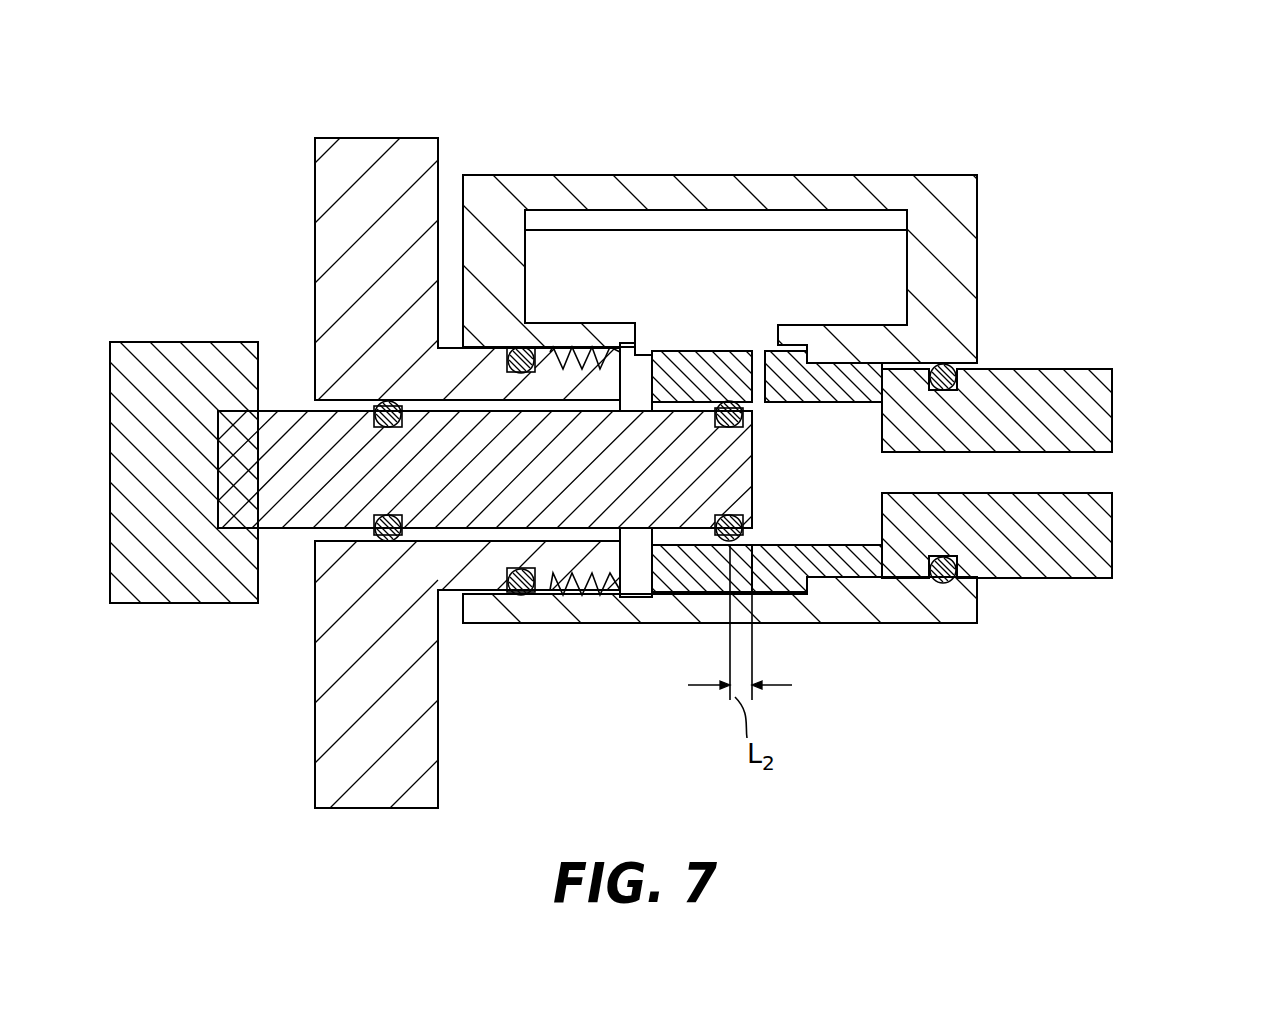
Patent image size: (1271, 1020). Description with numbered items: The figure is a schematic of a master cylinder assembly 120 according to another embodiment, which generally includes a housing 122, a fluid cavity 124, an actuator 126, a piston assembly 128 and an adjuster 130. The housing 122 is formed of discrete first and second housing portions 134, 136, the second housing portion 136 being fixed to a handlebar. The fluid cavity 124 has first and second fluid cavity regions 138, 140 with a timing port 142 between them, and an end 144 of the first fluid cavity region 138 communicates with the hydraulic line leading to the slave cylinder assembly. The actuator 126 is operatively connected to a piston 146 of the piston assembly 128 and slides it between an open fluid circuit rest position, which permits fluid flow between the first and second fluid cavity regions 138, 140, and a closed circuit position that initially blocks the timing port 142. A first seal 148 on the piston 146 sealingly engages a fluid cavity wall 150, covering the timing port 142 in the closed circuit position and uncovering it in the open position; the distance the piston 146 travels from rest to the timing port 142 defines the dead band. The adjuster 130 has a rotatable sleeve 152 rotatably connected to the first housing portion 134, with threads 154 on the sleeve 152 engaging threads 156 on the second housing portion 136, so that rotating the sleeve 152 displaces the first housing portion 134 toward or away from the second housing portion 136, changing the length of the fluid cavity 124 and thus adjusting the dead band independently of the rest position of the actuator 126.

The master cylinder assembly 120 is at (823, 85).
The housing 122 is at (280, 252).
The fluid cavity 124 is at (850, 558).
The actuator 126 is at (145, 580).
The piston assembly 128 is at (293, 552).
The adjuster 130 is at (555, 165).
The first housing portion 134 is at (1085, 380).
The second housing portion 136 is at (485, 575).
The first fluid cavity region 138 is at (873, 520).
The second fluid cavity region 140 is at (852, 250).
The timing port 142 is at (757, 378).
The end of the first fluid cavity region 144 is at (1098, 478).
The piston 146 is at (300, 427).
The first seal 148 is at (723, 402).
The fluid cavity wall 150 is at (678, 402).
The rotatable sleeve 152 is at (670, 188).
The threads 154 is at (612, 595).
The threads 156 is at (592, 592).